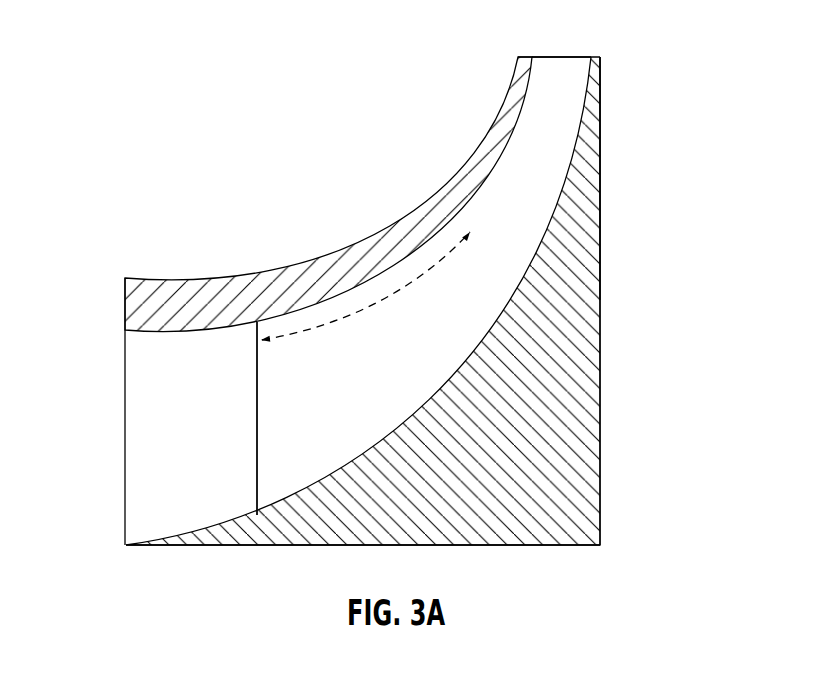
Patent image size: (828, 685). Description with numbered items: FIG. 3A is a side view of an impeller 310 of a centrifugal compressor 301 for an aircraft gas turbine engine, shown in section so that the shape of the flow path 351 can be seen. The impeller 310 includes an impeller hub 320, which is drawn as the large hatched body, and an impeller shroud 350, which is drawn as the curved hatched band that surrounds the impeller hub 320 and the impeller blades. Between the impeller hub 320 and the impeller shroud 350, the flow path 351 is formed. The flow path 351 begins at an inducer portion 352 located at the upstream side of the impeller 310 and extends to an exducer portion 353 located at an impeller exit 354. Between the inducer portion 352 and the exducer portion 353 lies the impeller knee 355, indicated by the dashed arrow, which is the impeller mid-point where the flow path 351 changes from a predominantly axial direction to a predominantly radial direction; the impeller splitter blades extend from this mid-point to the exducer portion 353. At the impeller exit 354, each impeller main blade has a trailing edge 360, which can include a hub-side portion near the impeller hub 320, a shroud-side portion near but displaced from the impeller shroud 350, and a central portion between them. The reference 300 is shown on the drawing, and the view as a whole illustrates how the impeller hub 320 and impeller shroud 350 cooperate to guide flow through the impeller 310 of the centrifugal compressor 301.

The body 300 is at (480, 308).
The centrifugal compressor 301 is at (614, 90).
The impeller 310 is at (125, 548).
The impeller hub 320 is at (565, 312).
The impeller shroud 350 is at (500, 142).
The flow path 351 is at (363, 385).
The inducer portion 352 is at (185, 453).
The exducer portion 353 is at (581, 106).
The impeller exit 354 is at (555, 50).
The impeller knee 355 is at (336, 320).
The trailing edge 360 is at (575, 63).